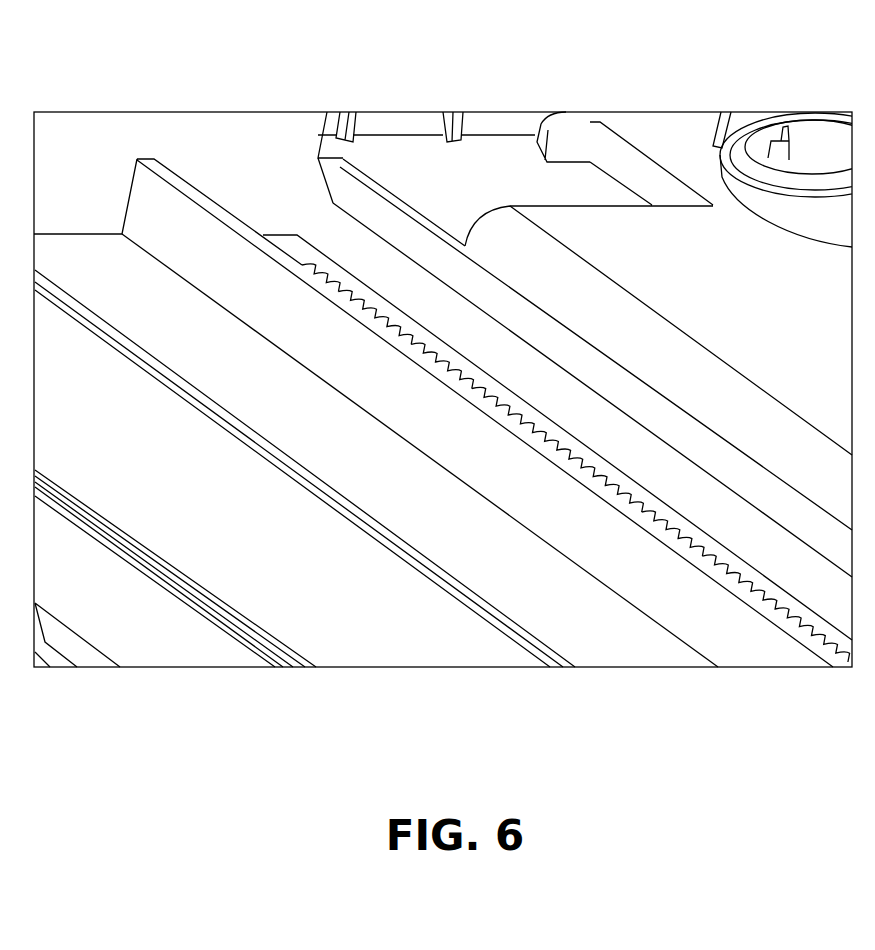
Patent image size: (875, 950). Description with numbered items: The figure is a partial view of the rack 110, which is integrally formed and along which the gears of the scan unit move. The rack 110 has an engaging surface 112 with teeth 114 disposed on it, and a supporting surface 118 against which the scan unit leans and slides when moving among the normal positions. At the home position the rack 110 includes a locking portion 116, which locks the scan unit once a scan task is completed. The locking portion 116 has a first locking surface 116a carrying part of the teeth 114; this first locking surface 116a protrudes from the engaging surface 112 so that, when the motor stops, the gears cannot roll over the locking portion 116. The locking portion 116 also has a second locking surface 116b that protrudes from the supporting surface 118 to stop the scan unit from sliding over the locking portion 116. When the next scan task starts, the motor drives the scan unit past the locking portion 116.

The rack 110 is at (745, 645).
The engaging surface 112 is at (198, 182).
The teeth 114 is at (306, 262).
The locking portion 116 is at (505, 395).
The first locking surface 116a is at (439, 346).
The second locking surface 116b is at (376, 310).
The supporting surface 118 is at (665, 528).